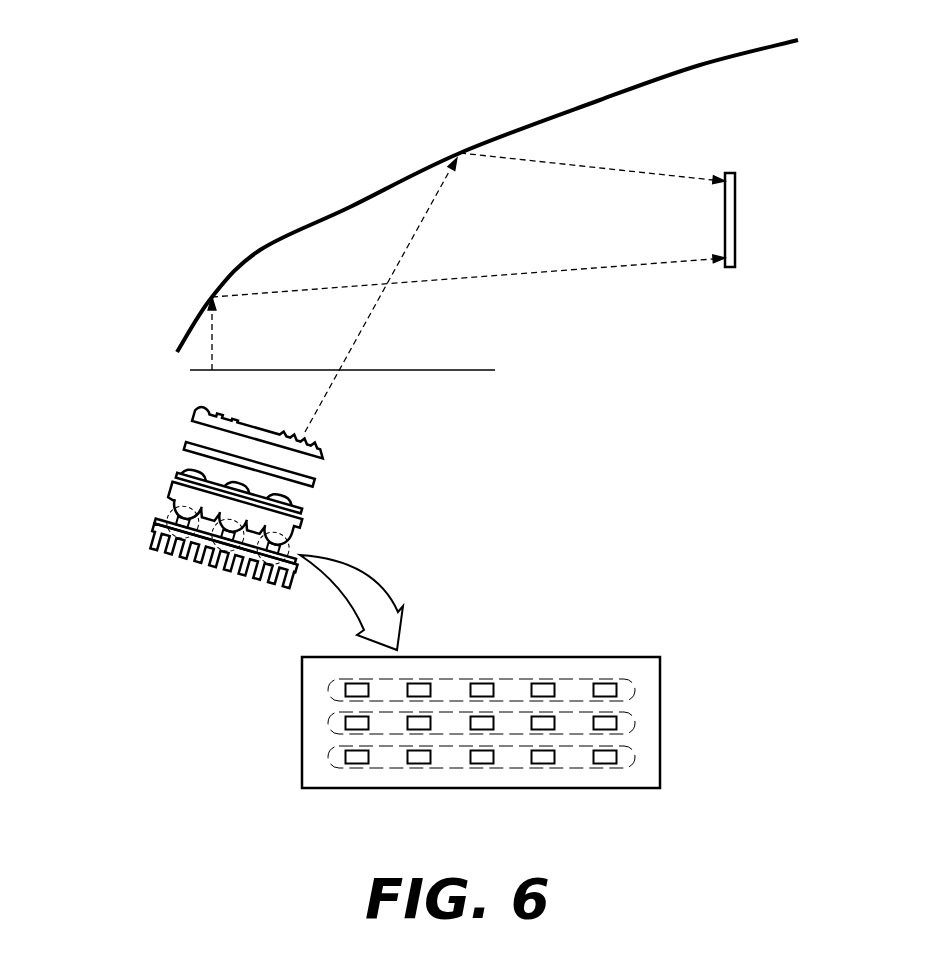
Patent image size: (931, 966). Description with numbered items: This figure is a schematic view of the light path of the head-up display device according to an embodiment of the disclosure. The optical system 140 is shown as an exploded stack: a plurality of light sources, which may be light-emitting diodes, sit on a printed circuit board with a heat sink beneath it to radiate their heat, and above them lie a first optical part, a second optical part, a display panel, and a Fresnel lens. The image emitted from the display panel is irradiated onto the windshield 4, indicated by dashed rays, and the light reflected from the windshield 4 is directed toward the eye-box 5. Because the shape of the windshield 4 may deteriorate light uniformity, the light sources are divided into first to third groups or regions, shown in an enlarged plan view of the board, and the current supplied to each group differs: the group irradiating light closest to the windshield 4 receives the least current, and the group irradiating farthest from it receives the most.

The windshield 4 is at (350, 206).
The eye-box 5 is at (736, 208).
The optical system 140 is at (365, 470).